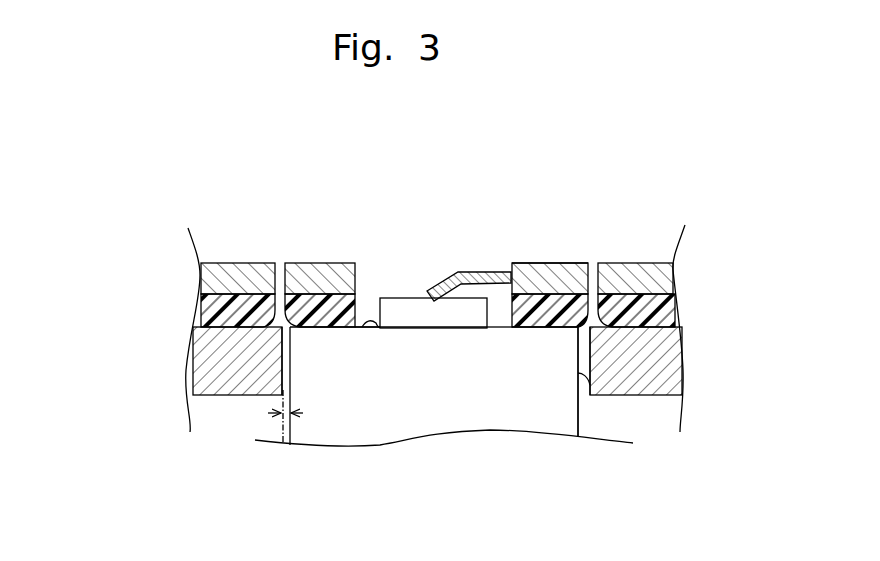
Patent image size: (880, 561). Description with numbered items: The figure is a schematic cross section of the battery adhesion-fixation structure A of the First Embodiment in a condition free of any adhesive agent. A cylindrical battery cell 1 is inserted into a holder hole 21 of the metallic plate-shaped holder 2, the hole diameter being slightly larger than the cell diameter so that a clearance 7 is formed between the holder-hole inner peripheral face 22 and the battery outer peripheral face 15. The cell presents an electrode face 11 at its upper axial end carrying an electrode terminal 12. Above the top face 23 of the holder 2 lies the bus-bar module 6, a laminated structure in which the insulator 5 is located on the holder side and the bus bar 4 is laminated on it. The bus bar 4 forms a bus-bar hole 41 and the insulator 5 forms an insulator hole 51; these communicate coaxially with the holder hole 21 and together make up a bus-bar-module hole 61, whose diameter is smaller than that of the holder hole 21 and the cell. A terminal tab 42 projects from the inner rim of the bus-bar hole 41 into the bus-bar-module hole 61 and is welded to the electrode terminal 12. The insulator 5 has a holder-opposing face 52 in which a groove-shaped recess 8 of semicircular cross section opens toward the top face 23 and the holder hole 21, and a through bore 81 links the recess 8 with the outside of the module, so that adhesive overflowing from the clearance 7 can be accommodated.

The battery adhesion-fixation structure A is at (68, 186).
The battery cell 1 is at (435, 413).
The electrode face 11 is at (385, 328).
The electrode terminal 12 is at (452, 317).
The battery outer peripheral face 15 is at (584, 416).
The holder 2 is at (213, 360).
The holder hole 21 is at (282, 372).
The holder-hole inner peripheral face 22 is at (592, 395).
The top face 23 is at (636, 321).
The bus bar 4 is at (201, 275).
The insulator 5 is at (428, 311).
The bus-bar module 6 is at (95, 232).
The clearance 7 is at (283, 430).
The recess 8 is at (247, 263).
The through bore 81 is at (279, 319).
The bus-bar hole 41 is at (418, 268).
The terminal tab 42 is at (508, 263).
The insulator hole 51 is at (495, 309).
The holder-opposing face 52 is at (547, 328).
The bus-bar-module hole 61 is at (478, 185).